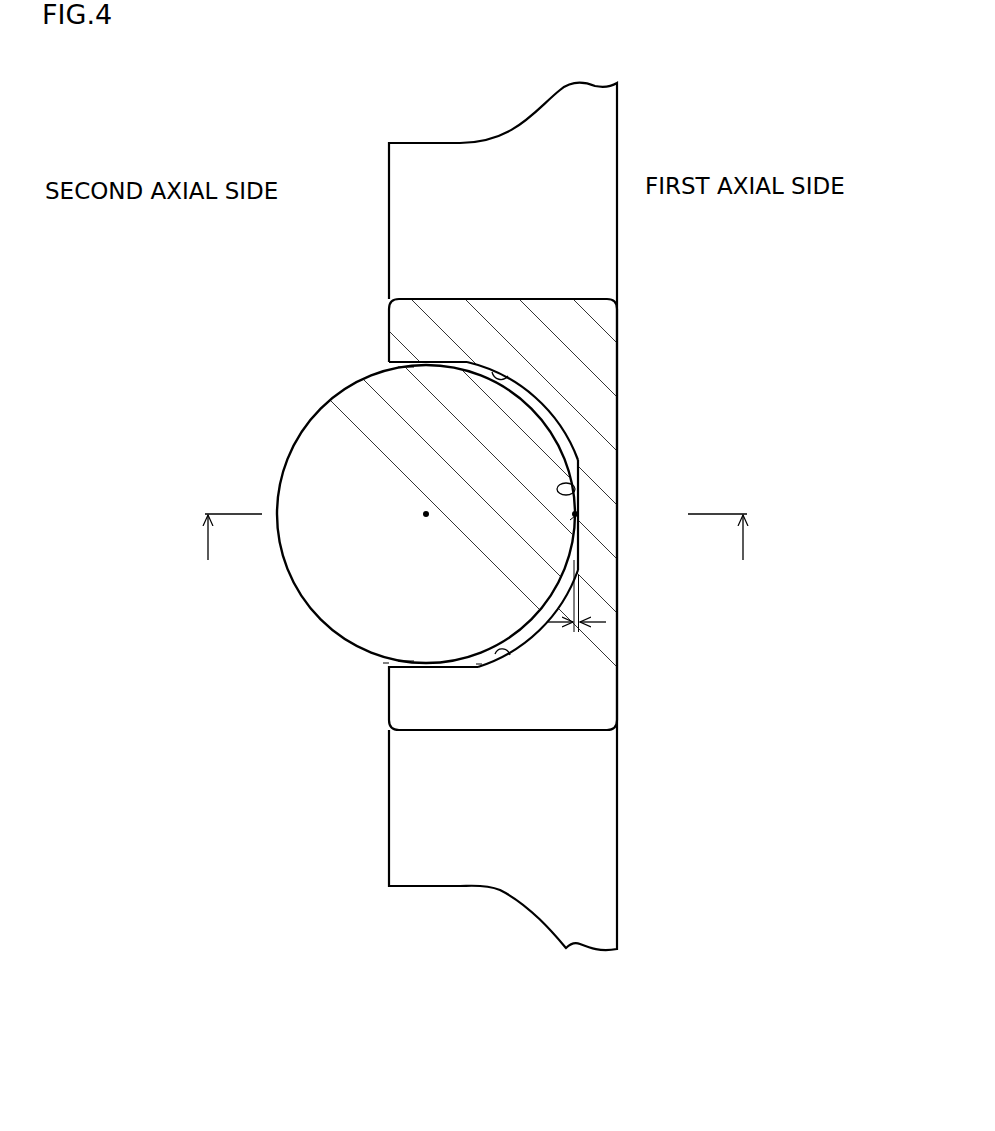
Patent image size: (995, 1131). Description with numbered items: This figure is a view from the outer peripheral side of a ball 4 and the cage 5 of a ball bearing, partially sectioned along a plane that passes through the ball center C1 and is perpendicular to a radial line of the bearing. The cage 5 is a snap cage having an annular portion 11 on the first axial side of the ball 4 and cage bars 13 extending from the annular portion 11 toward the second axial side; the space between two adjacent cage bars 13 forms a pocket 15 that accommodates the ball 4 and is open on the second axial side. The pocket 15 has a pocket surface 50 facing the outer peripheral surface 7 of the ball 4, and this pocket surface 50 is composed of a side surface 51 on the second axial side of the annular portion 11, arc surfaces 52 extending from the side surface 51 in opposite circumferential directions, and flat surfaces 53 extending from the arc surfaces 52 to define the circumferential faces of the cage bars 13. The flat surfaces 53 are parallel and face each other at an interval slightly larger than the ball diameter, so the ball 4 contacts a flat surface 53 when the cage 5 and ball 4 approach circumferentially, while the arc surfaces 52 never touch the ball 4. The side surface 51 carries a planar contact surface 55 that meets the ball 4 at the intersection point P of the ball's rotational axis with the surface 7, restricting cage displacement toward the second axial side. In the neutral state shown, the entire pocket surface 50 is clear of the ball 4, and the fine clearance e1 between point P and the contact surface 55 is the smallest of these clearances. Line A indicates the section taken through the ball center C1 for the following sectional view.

The ball 4 is at (282, 470).
The cage 5 is at (618, 638).
The surface of the ball 7 is at (558, 420).
The annular portion 11 is at (602, 530).
The cage bar 13 is at (490, 258).
The pocket 15 is at (384, 663).
The pocket surface 50 is at (480, 663).
The side surface 51 is at (574, 523).
The arc surface 52 is at (506, 375).
The flat surface 53 is at (406, 366).
The contact surface 55 is at (570, 490).
The intersection point P is at (577, 514).
The ball center C1 is at (424, 501).
The clearance e1 is at (577, 608).
The line A- A is at (475, 551).